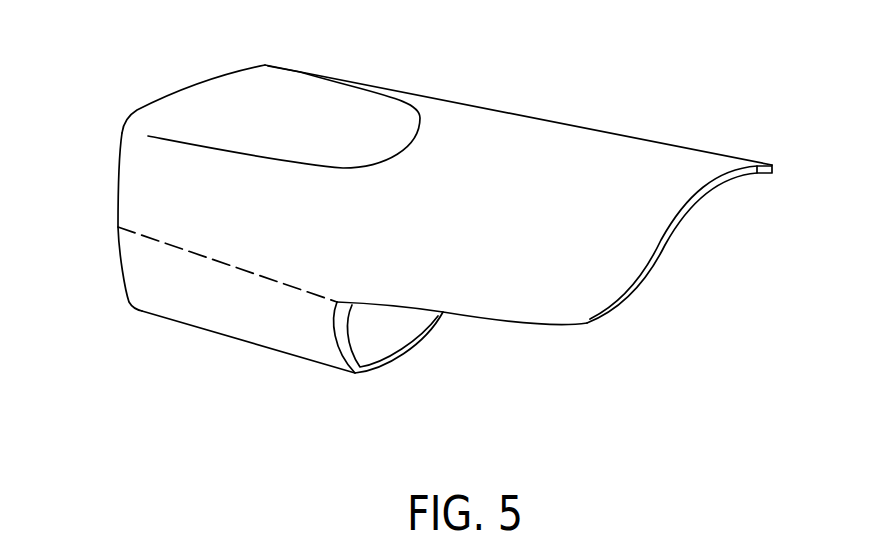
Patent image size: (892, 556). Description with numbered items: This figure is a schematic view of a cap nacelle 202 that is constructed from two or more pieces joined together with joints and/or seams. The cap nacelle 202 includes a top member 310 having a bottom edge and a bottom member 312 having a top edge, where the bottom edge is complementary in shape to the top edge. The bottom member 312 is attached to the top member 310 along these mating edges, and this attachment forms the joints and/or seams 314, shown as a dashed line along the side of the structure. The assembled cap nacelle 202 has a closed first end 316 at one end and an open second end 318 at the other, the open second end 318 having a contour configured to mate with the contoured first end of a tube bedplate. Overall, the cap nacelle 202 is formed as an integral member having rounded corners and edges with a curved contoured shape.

The cap nacelle 202 is at (412, 214).
The top member 310 is at (173, 93).
The bottom member 312 is at (243, 317).
The joints and/or seams 314 is at (156, 243).
The closed first end 316 is at (118, 156).
The open second end 318 is at (588, 323).